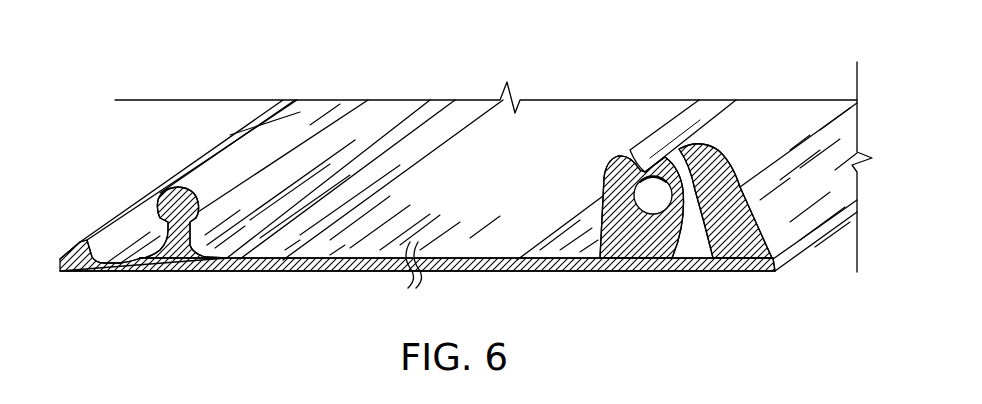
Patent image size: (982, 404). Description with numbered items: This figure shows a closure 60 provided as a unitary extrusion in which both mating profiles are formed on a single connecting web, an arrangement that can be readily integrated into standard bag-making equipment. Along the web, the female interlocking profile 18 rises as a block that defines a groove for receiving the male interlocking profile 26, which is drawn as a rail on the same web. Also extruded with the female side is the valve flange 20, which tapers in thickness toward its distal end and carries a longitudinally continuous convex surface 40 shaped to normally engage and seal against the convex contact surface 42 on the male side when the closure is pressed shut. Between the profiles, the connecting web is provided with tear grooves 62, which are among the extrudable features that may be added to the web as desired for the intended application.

The closure 60 is at (466, 144).
The valve flange 20 is at (773, 206).
The convex contact surface 42 is at (116, 218).
The male interlocking profile 26 is at (204, 160).
The tear grooves 62 is at (380, 192).
The female interlocking profile 18 is at (628, 152).
The convex surface 40 is at (722, 122).